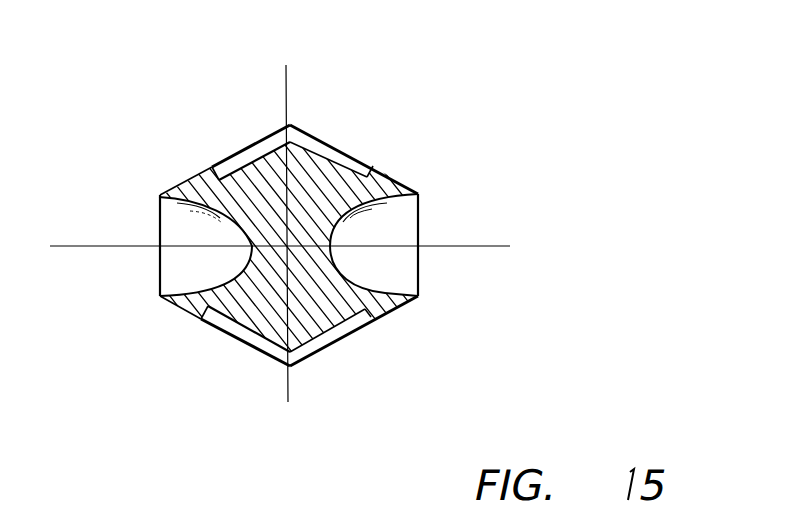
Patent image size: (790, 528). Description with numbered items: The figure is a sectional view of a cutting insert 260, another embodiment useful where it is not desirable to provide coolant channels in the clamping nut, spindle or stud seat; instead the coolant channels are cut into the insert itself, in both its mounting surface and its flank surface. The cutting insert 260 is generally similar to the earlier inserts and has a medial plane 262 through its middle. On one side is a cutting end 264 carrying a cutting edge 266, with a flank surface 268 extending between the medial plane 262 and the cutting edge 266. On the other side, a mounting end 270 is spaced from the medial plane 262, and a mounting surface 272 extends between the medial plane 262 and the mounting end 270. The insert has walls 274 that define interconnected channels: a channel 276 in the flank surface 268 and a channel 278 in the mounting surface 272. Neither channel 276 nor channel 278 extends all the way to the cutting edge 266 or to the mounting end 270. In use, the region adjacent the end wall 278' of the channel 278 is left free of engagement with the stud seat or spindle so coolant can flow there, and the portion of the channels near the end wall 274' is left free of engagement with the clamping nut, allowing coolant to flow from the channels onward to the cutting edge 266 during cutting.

The cutting insert 260 is at (405, 173).
The medial plane 262 is at (291, 124).
The cutting end 264 is at (160, 196).
The cutting edge 266 is at (160, 298).
The flank surface 268 is at (182, 310).
The mounting end 270 is at (418, 296).
The mounting surface 272 is at (395, 300).
The walls 274 is at (195, 221).
The end wall 274' is at (159, 137).
The channel in the flank surface 276 is at (252, 143).
The channel in the mounting surface 278 is at (357, 230).
The end wall 278' is at (446, 172).